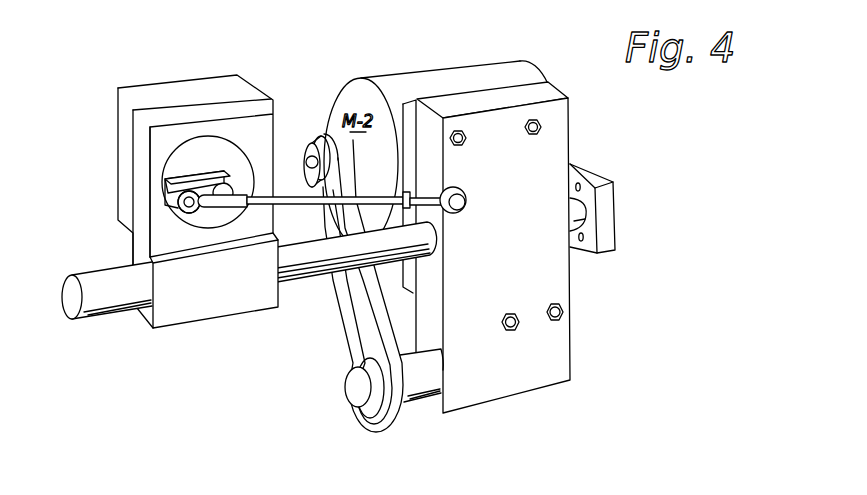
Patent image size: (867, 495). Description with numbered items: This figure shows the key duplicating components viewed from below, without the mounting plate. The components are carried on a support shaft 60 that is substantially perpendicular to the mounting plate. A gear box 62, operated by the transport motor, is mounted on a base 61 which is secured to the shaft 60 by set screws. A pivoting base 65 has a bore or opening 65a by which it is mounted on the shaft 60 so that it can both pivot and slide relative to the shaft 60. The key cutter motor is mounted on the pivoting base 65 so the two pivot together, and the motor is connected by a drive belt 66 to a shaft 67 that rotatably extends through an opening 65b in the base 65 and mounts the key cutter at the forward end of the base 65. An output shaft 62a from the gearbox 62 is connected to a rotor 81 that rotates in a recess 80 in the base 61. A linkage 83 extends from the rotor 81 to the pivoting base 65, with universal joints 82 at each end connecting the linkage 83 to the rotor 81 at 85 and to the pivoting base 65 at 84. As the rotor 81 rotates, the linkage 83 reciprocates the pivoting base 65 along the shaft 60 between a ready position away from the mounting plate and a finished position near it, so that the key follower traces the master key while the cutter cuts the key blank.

The support shaft 60 is at (103, 319).
The base 61 is at (253, 291).
The gear box 62 is at (127, 123).
The output shaft 62a is at (240, 164).
The pivoting base 65 is at (523, 288).
The bore or opening 65a is at (445, 252).
The opening 65b is at (445, 353).
The drive belt 66 is at (346, 341).
The shaft 67 is at (421, 403).
The recess 80 is at (226, 176).
The rotor 81 is at (196, 177).
The universal joints 82 is at (226, 210).
The linkage 83 is at (285, 205).
The connection point on pivoting base 84 is at (470, 202).
The connection point on rotor 85 is at (188, 208).